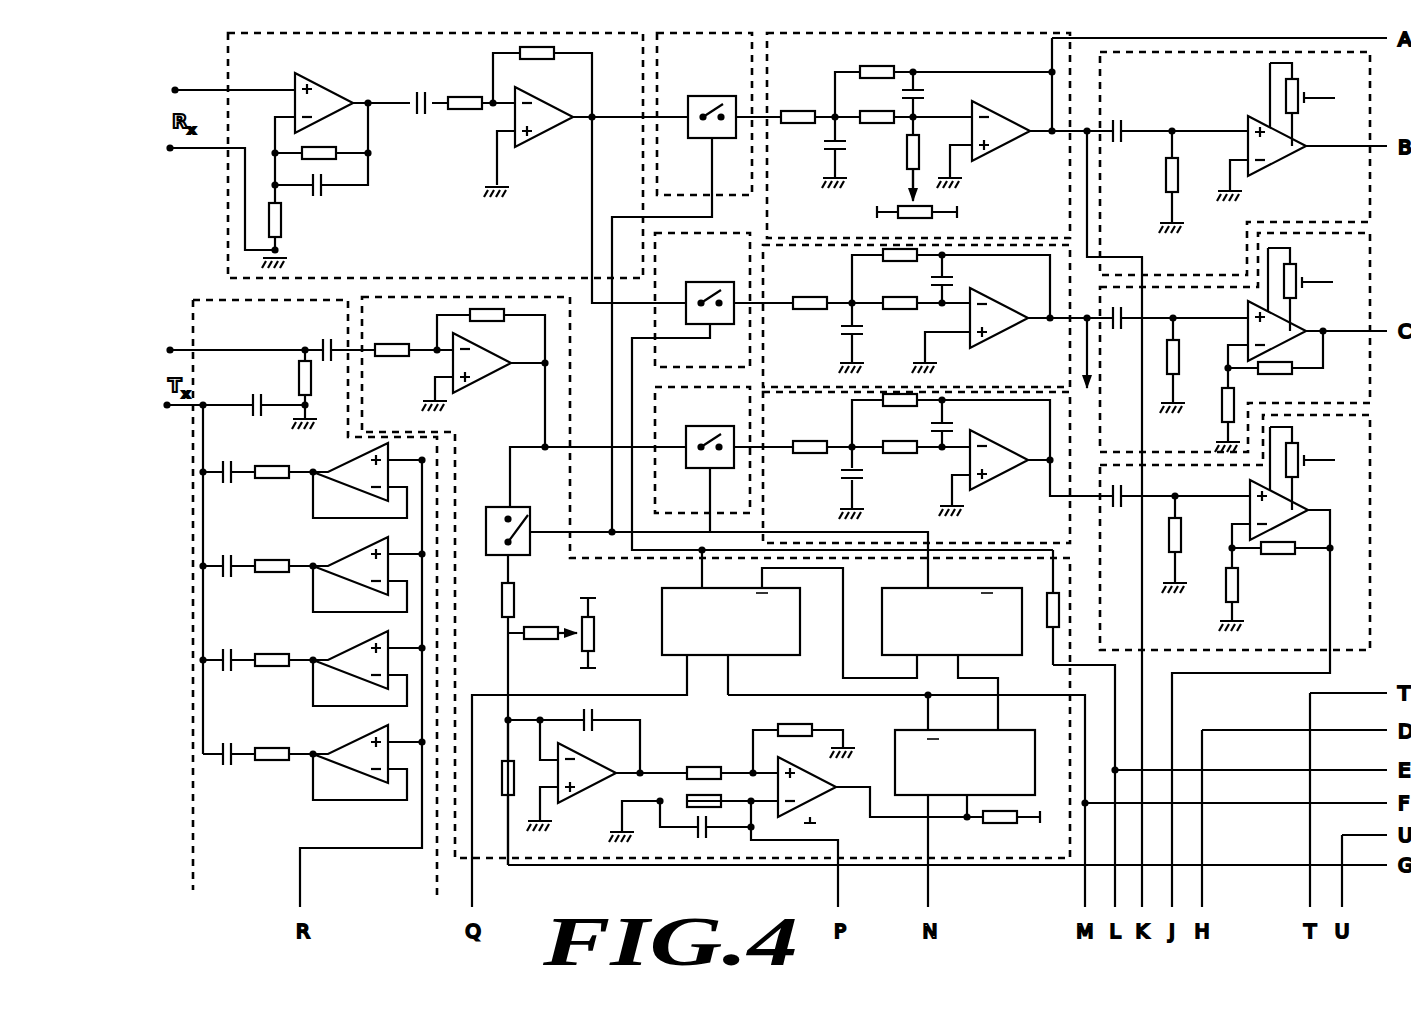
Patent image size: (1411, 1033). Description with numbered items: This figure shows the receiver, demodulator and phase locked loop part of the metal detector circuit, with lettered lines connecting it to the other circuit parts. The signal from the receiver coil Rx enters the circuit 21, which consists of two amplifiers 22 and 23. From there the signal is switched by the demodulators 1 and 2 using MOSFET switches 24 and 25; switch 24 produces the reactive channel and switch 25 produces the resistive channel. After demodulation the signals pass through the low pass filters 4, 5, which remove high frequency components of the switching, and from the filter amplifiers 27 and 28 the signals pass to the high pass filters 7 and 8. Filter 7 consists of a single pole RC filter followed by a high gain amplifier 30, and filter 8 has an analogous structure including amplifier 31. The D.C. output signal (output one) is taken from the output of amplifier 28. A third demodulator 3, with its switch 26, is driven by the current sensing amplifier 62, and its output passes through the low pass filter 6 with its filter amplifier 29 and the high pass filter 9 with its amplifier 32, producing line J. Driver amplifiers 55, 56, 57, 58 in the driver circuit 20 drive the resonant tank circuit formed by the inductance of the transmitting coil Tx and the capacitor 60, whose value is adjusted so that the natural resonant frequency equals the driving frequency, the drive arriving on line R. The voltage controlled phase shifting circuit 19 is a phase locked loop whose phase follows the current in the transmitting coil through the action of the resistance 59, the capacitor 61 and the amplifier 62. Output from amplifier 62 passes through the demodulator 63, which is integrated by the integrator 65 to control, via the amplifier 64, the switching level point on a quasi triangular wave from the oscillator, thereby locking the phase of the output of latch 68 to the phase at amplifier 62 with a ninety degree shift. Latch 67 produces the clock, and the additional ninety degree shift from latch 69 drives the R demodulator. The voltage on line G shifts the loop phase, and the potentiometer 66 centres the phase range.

The demodulator 1 is at (662, 86).
The demodulator 2 is at (660, 277).
The demodulator 3 is at (660, 422).
The low pass filter 4 is at (840, 36).
The low pass filter 5 is at (770, 370).
The low pass filter 6 is at (770, 518).
The high pass filter 7 is at (1368, 200).
The high pass filter 8 is at (1366, 393).
The high pass filter 9 is at (1364, 602).
The voltage controlled phase shifting circuit 19 is at (460, 456).
The driver circuit 20 is at (434, 866).
The circuit 21 is at (465, 276).
The amplifier 22 is at (318, 103).
The amplifier 23 is at (546, 118).
The MOSFET switch 24 is at (710, 127).
The MOSFET switch 25 is at (722, 292).
The MOSFET switch 26 is at (722, 438).
The filter amplifier 27 is at (997, 133).
The filter amplifier 28 is at (1000, 310).
The filter amplifier 29 is at (996, 460).
The high gain amplifier 30 is at (1250, 120).
The amplifier 31 is at (1250, 300).
The amplifier 32 is at (1253, 480).
The driver amplifier 55 is at (368, 475).
The driver amplifier 56 is at (368, 569).
The driver amplifier 57 is at (368, 661).
The driver amplifier 58 is at (368, 756).
The resistance 59 is at (302, 386).
The capacitor 60 is at (268, 420).
The capacitor 61 is at (320, 341).
The amplifier 62 is at (476, 366).
The demodulator 63 is at (526, 516).
The amplifier 64 is at (770, 777).
The integrator 65 is at (579, 777).
The potentiometer 66 is at (573, 643).
The latch 67 is at (908, 742).
The latch 68 is at (1000, 636).
The latch 69 is at (772, 636).